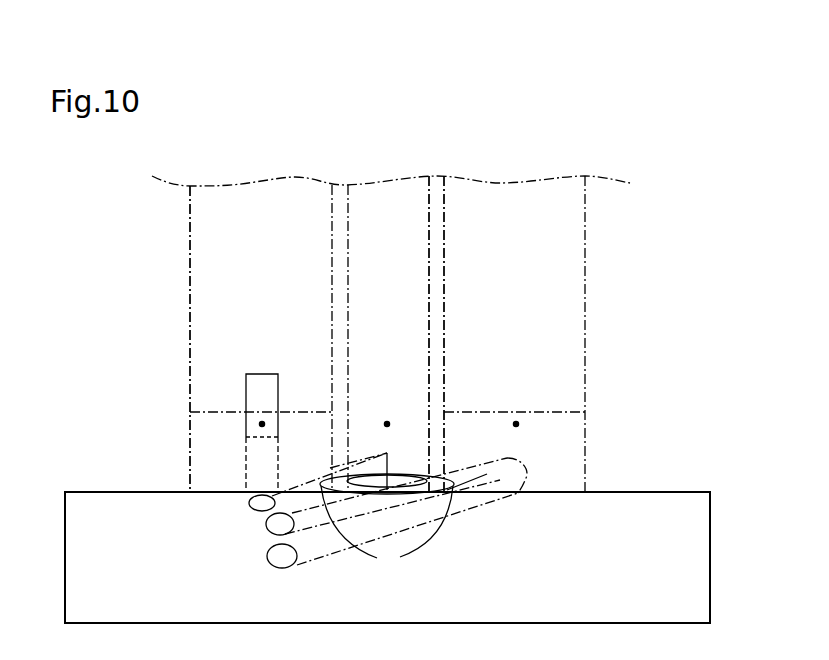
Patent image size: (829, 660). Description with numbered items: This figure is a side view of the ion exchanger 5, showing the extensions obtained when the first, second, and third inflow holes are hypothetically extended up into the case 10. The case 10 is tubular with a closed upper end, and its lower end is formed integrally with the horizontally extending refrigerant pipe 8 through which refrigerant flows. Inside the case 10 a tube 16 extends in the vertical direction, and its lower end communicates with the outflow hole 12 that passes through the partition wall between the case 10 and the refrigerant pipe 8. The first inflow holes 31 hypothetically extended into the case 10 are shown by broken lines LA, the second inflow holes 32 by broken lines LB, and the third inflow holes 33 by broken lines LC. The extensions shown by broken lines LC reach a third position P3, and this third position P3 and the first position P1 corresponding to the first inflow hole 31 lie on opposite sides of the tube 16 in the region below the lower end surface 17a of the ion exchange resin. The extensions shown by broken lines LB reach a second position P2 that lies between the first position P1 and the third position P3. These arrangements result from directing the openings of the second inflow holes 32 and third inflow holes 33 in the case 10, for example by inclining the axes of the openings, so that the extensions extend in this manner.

The ion exchanger 5 is at (645, 208).
The tube 16 is at (444, 228).
The lower end surface 17a is at (555, 412).
The case 10 is at (189, 443).
The refrigerant pipe 8 is at (129, 491).
The outflow hole 12 is at (408, 483).
The first inflow holes 31 is at (248, 500).
The second inflow holes 32 is at (265, 530).
The third inflow holes 33 is at (266, 557).
The broken lines LA is at (262, 373).
The broken lines LB is at (309, 480).
The broken lines LC is at (478, 512).
The first position P1 is at (262, 420).
The second position P2 is at (387, 420).
The third position P3 is at (516, 420).